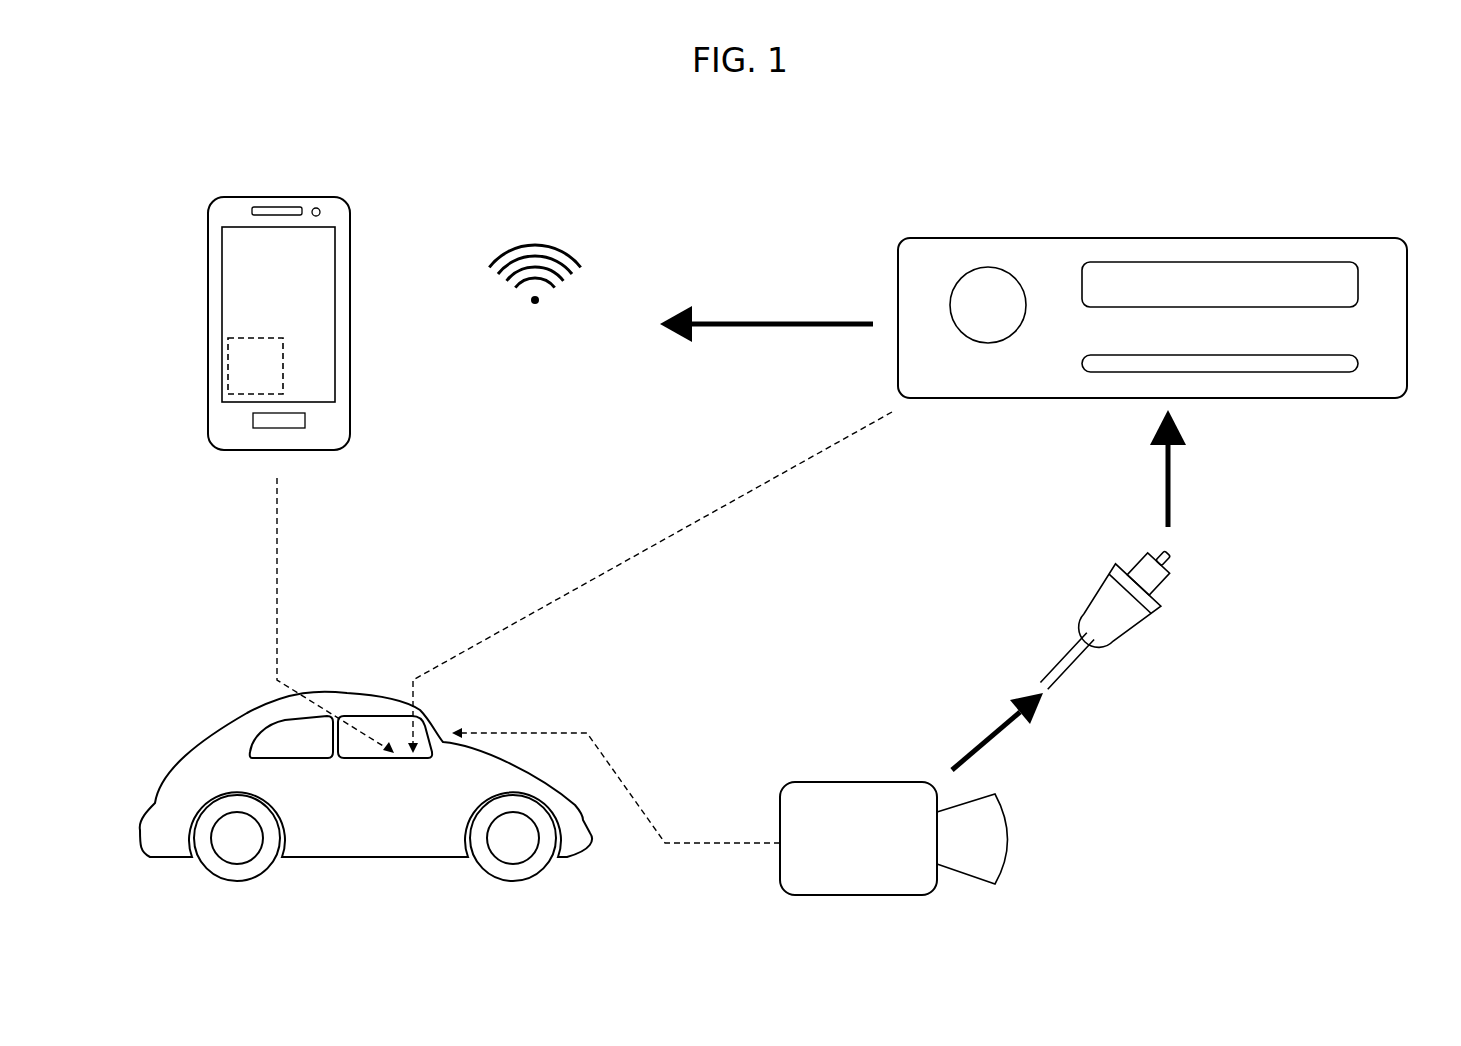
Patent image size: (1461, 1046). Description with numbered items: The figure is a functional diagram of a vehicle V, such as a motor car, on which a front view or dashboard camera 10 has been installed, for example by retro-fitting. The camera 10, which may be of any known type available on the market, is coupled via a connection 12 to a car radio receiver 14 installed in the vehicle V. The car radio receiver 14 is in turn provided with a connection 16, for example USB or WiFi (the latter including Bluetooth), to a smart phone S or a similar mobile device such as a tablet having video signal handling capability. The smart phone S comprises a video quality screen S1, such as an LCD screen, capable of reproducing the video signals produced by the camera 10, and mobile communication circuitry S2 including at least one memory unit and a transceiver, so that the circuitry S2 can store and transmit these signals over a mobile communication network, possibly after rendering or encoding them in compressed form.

The smart phone S is at (292, 195).
The video quality screen S1 is at (248, 292).
The mobile communication circuitry S2 is at (243, 372).
The car radio receiver 14 is at (1398, 248).
The connection 16 is at (890, 282).
The connection 12 is at (1137, 617).
The front view camera 10 is at (840, 885).
The vehicle V is at (352, 868).